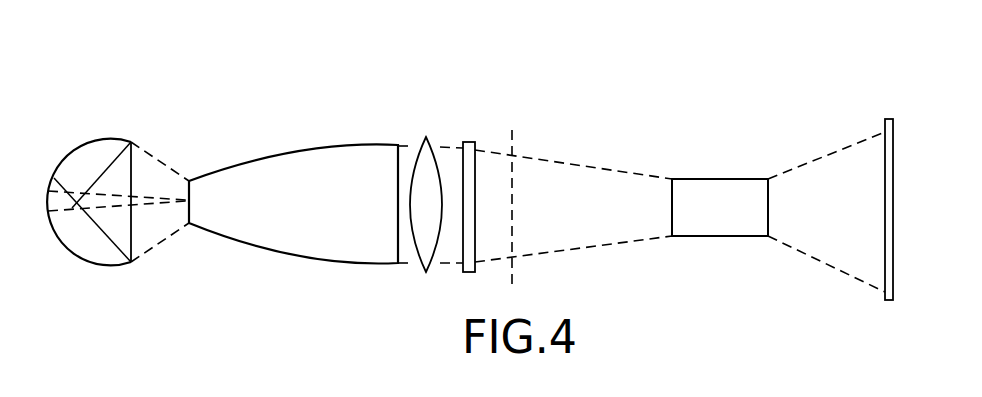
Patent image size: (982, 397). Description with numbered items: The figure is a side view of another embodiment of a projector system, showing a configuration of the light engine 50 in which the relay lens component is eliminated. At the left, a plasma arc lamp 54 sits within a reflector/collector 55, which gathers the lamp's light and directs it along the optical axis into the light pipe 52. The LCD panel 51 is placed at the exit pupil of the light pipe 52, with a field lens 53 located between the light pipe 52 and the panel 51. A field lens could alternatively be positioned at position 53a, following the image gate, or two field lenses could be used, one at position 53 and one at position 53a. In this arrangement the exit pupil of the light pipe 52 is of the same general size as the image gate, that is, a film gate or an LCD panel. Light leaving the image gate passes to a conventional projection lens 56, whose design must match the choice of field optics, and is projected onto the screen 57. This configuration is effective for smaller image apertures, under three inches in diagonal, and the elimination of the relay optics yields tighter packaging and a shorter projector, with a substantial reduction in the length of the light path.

The light engine 50 is at (607, 162).
The LCD panel 51 is at (467, 142).
The light pipe 52 is at (293, 150).
The field lens 53 is at (425, 271).
The field lens position 53a is at (513, 152).
The plasma arc lamp 54 is at (77, 203).
The reflector/collector 55 is at (100, 145).
The projection lens 56 is at (703, 179).
The screen 57 is at (887, 119).